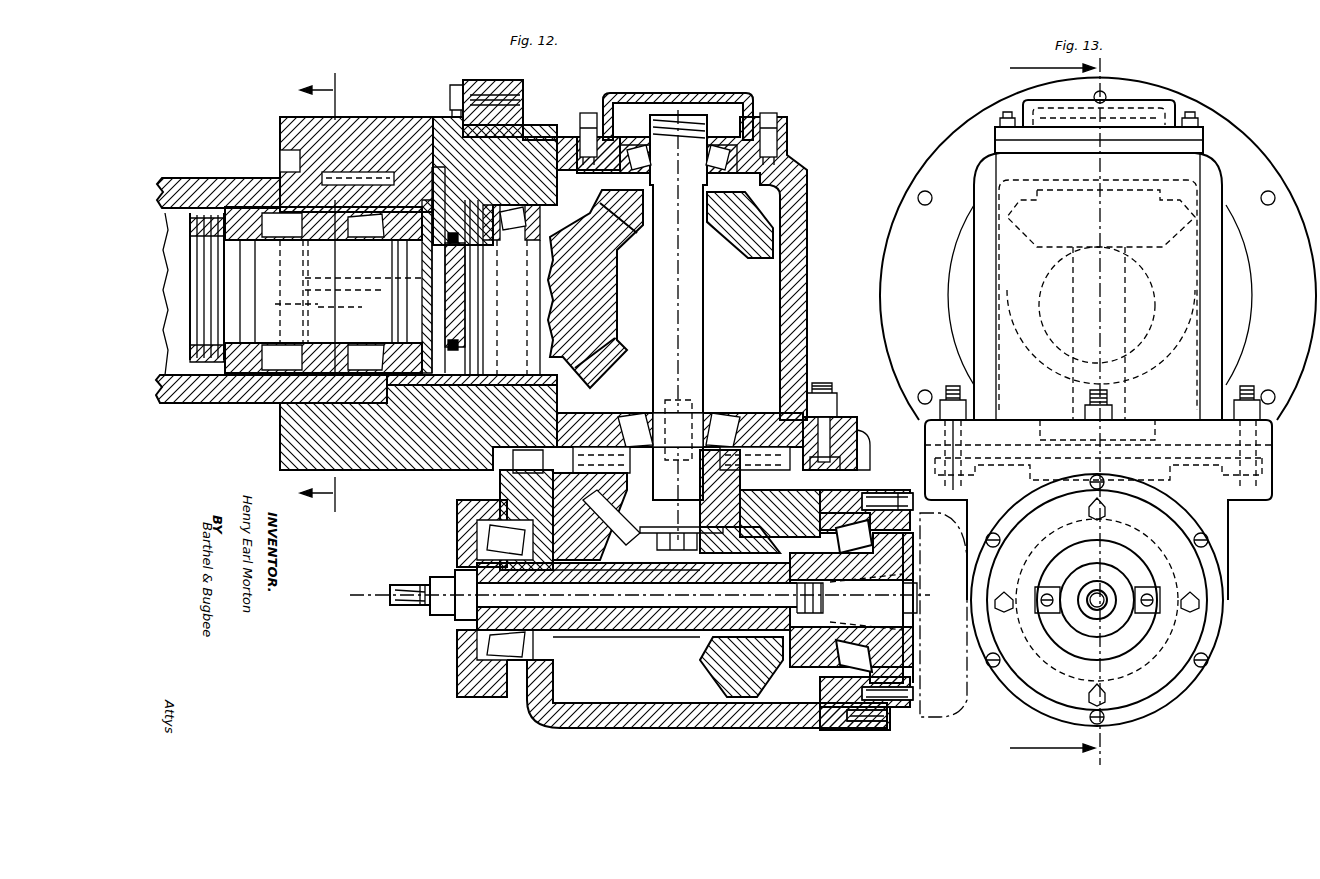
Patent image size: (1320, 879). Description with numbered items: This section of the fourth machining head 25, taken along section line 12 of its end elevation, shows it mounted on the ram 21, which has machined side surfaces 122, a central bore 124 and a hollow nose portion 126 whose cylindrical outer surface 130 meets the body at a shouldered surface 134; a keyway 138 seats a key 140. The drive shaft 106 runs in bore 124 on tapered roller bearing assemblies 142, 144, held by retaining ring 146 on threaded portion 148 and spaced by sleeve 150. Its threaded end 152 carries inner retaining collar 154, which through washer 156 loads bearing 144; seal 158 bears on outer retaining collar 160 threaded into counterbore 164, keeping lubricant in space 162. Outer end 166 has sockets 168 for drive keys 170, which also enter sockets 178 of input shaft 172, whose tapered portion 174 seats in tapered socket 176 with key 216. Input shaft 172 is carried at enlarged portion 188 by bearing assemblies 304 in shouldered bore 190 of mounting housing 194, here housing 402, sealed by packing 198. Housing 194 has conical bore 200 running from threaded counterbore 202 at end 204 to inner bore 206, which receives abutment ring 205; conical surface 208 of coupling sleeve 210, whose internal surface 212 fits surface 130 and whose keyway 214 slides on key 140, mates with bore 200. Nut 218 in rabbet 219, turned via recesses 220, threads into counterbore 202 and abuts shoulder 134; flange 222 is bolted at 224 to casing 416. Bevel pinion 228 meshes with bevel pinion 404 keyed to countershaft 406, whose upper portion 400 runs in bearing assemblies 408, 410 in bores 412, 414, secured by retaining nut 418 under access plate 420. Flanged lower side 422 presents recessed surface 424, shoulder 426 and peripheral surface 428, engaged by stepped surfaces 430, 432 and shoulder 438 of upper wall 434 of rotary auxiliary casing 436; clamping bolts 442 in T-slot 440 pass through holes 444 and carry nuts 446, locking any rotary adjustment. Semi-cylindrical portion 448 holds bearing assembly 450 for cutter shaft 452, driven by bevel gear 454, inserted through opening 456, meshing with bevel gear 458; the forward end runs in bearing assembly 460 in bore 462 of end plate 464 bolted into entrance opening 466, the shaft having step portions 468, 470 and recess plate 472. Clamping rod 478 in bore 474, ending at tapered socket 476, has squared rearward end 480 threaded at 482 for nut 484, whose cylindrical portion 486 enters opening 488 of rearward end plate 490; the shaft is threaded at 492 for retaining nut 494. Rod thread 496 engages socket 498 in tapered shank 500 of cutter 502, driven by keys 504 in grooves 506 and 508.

In FIG. 12, the ram 21 is at (193, 414).
In FIG. 12, the fourth machining head 25 is at (413, 104).
In FIG. 13, the fourth machining head 25 is at (1248, 126).
In FIG. 12, the drive shaft 106 is at (178, 352).
In FIG. 12, the machined side surfaces 122 is at (225, 404).
In FIG. 12, the bore 124 is at (200, 192).
In FIG. 12, the nose portion 126 is at (272, 240).
In FIG. 12, the cylindrical outer surface 130 is at (280, 402).
In FIG. 12, the shouldered surface 134 is at (262, 284).
In FIG. 12, the keyway 138 is at (362, 128).
In FIG. 12, the key 140 is at (383, 120).
In FIG. 12, the tapered roller bearing assembly 142 is at (245, 258).
In FIG. 12, the tapered roller bearing assembly 144 is at (347, 232).
In FIG. 12, the retaining ring 146 is at (195, 226).
In FIG. 12, the threaded portion 148 is at (179, 269).
In FIG. 12, the spacing sleeve 150 is at (294, 229).
In FIG. 12, the threaded outer end 152 is at (392, 270).
In FIG. 12, the inner retaining collar 154 is at (384, 266).
In FIG. 12, the washer 156 is at (379, 252).
In FIG. 12, the lubricant seal 158 is at (396, 335).
In FIG. 12, the outer retaining collar 160 is at (388, 470).
In FIG. 12, the space 162 is at (292, 354).
In FIG. 12, the threaded counterbore 164 is at (412, 470).
In FIG. 12, the outer end 166 is at (428, 302).
In FIG. 12, the sockets 168 is at (440, 316).
In FIG. 12, the drive keys 170 is at (386, 317).
In FIG. 12, the input shaft 172 is at (604, 318).
In FIG. 12, the tapered reduced diameter portion 174 is at (454, 283).
In FIG. 12, the tapered socket 176 is at (321, 330).
In FIG. 12, the sockets 178 is at (432, 268).
In FIG. 12, the shaft portion 188 is at (509, 312).
In FIG. 12, the shouldered bore 190 is at (446, 120).
In FIG. 12, the mounting housing 194 is at (420, 492).
In FIG. 12, the annular seal 198 is at (455, 245).
In FIG. 12, the conical bore 200 is at (391, 128).
In FIG. 12, the threaded counterbore 202 is at (271, 496).
In FIG. 12, the end 204 is at (284, 456).
In FIG. 12, the abutment ring 205 is at (416, 170).
In FIG. 12, the inner bore 206 is at (436, 444).
In FIG. 12, the external conical surface 208 is at (303, 478).
In FIG. 12, the coupling sleeve 210 is at (360, 405).
In FIG. 12, the internal cylindrical surface 212 is at (360, 470).
In FIG. 12, the keyway 214 is at (316, 122).
In FIG. 12, the key 216 is at (300, 302).
In FIG. 12, the clamping nut 218 is at (276, 155).
In FIG. 12, the rabbet 219 is at (290, 446).
In FIG. 12, the end recesses 220 is at (283, 160).
In FIG. 12, the flange 222 is at (498, 80).
In FIG. 12, the bolts 224 is at (454, 85).
In FIG. 13, the bolts 224 is at (925, 206).
In FIG. 12, the bevel pinion 228 is at (612, 373).
In FIG. 13, the bevel pinion 228 is at (1029, 393).
In FIG. 12, the tapered roller bearing assemblies 304 is at (546, 257).
In FIG. 12, the vertical shaft 400 is at (703, 318).
In FIG. 12, the mounting housing 402 is at (392, 89).
In FIG. 12, the bevel pinion 404 is at (745, 242).
In FIG. 13, the bevel pinion 404 is at (1029, 274).
In FIG. 13, the countershaft 406 is at (1075, 311).
In FIG. 12, the tapered roller bearing assembly 408 is at (718, 413).
In FIG. 12, the tapered roller bearing assembly 410 is at (730, 172).
In FIG. 12, the bore 412 is at (620, 413).
In FIG. 13, the bore 412 is at (1029, 408).
In FIG. 12, the bore 414 is at (800, 166).
In FIG. 13, the bore 414 is at (985, 163).
In FIG. 12, the casing 416 is at (817, 245).
In FIG. 13, the casing 416 is at (1232, 288).
In FIG. 12, the retaining nut 418 is at (760, 123).
In FIG. 13, the retaining nut 418 is at (1148, 112).
In FIG. 12, the access plate 420 is at (715, 95).
In FIG. 13, the access plate 420 is at (1135, 100).
In FIG. 12, the lower side 422 is at (808, 392).
In FIG. 13, the lower side 422 is at (1178, 420).
In FIG. 12, the recessed outer surface 424 is at (755, 413).
In FIG. 13, the recessed outer surface 424 is at (1185, 446).
In FIG. 12, the annular shoulder 426 is at (856, 447).
In FIG. 12, the peripheral surface 428 is at (850, 462).
In FIG. 12, the stepped outer surface 430 is at (786, 482).
In FIG. 12, the stepped inner surface 432 is at (758, 480).
In FIG. 12, the upper wall 434 is at (560, 488).
In FIG. 13, the upper wall 434 is at (1262, 503).
In FIG. 12, the rotary auxiliary casing 436 is at (549, 735).
In FIG. 12, the annular shoulder 438 is at (569, 518).
In FIG. 12, the annular T-slot 440 is at (560, 545).
In FIG. 13, the annular T-slot 440 is at (1246, 490).
In FIG. 12, the clamping bolts 442 is at (832, 393).
In FIG. 13, the clamping bolts 442 is at (951, 392).
In FIG. 12, the holes 444 is at (856, 432).
In FIG. 13, the holes 444 is at (1272, 452).
In FIG. 12, the nuts 446 is at (840, 420).
In FIG. 13, the nuts 446 is at (1272, 430).
In FIG. 12, the semi-cylindrical portion 448 is at (418, 470).
In FIG. 13, the semi-cylindrical portion 448 is at (1230, 527).
In FIG. 12, the tapered roller bearing assembly 450 is at (905, 560).
In FIG. 12, the cutter shaft 452 is at (658, 635).
In FIG. 12, the bevel gear 454 is at (620, 546).
In FIG. 13, the bevel gear 454 is at (1030, 561).
In FIG. 12, the circular opening 456 is at (590, 480).
In FIG. 12, the bevel gear 458 is at (748, 678).
In FIG. 12, the tapered roller bearing assembly 460 is at (870, 578).
In FIG. 12, the bore 462 is at (816, 523).
In FIG. 12, the end plate 464 is at (882, 492).
In FIG. 13, the end plate 464 is at (1160, 716).
In FIG. 12, the entrance opening 466 is at (832, 730).
In FIG. 12, the step portion 468 is at (870, 605).
In FIG. 12, the step portion 470 is at (898, 655).
In FIG. 13, the step portion 470 is at (1135, 641).
In FIG. 12, the annular recess plate 472 is at (890, 730).
In FIG. 13, the annular recess plate 472 is at (1185, 641).
In FIG. 12, the longitudinal bore 474 is at (627, 640).
In FIG. 12, the tapered socket 476 is at (905, 614).
In FIG. 13, the tapered socket 476 is at (1080, 620).
In FIG. 12, the clamping rod 478 is at (688, 632).
In FIG. 13, the clamping rod 478 is at (1107, 612).
In FIG. 12, the shaft end 480 is at (392, 602).
In FIG. 12, the threaded portion 482 is at (421, 615).
In FIG. 12, the nut 484 is at (441, 630).
In FIG. 12, the cylindrical portion 486 is at (441, 572).
In FIG. 12, the opening 488 is at (462, 556).
In FIG. 12, the rearward end plate 490 is at (462, 521).
In FIG. 12, the threaded portion 492 is at (470, 651).
In FIG. 12, the retaining nut 494 is at (470, 690).
In FIG. 12, the threaded forward end 496 is at (770, 595).
In FIG. 12, the threaded socket 498 is at (829, 595).
In FIG. 12, the tapered shank 500 is at (917, 586).
In FIG. 12, the cutter 502 is at (925, 730).
In FIG. 12, the driving keys 504 is at (918, 595).
In FIG. 13, the driving keys 504 is at (1047, 587).
In FIG. 12, the radial grooves 506 is at (898, 598).
In FIG. 12, the radial grooves 508 is at (917, 606).
In FIG. 13, the section line 12 is at (994, 409).